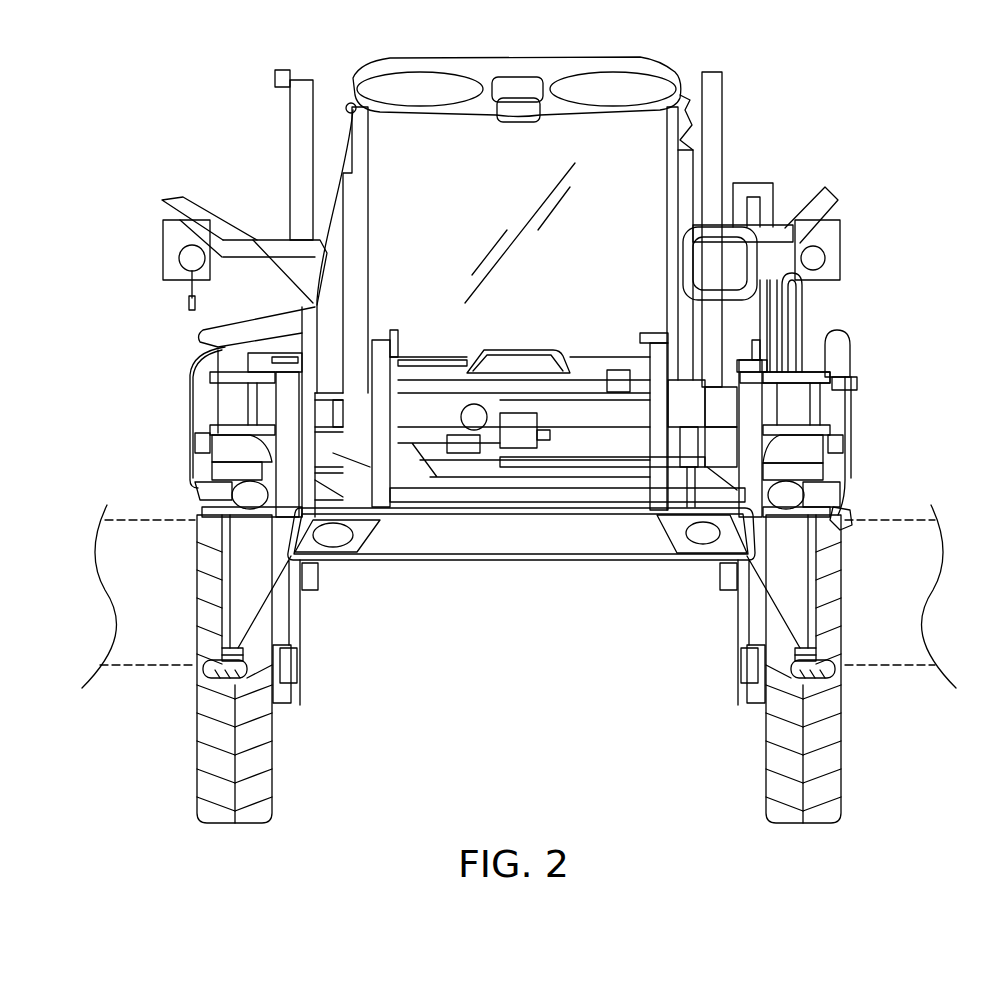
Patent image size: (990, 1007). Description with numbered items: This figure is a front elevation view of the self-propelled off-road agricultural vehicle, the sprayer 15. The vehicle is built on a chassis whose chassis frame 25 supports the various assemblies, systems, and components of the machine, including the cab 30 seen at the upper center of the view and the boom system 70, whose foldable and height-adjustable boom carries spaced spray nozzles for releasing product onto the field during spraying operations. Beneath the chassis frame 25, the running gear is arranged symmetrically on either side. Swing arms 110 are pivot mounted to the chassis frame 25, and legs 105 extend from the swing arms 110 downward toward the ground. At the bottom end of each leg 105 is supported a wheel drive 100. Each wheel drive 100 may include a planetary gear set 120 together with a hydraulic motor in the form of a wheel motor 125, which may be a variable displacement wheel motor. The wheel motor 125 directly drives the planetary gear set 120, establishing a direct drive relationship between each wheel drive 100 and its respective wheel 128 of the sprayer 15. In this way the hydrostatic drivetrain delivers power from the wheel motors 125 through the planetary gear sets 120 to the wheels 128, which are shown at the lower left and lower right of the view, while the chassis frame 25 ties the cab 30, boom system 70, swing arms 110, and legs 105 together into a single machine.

The sprayer 15 is at (842, 98).
The chassis frame 25 is at (617, 562).
The cab 30 is at (647, 55).
The boom system 70 is at (893, 495).
The wheel drive 100 is at (297, 705).
The leg 105 is at (305, 627).
The swing arm 110 is at (323, 580).
The planetary gear set 120 is at (277, 683).
The wheel motor 125 is at (297, 670).
The wheel 128 is at (238, 833).